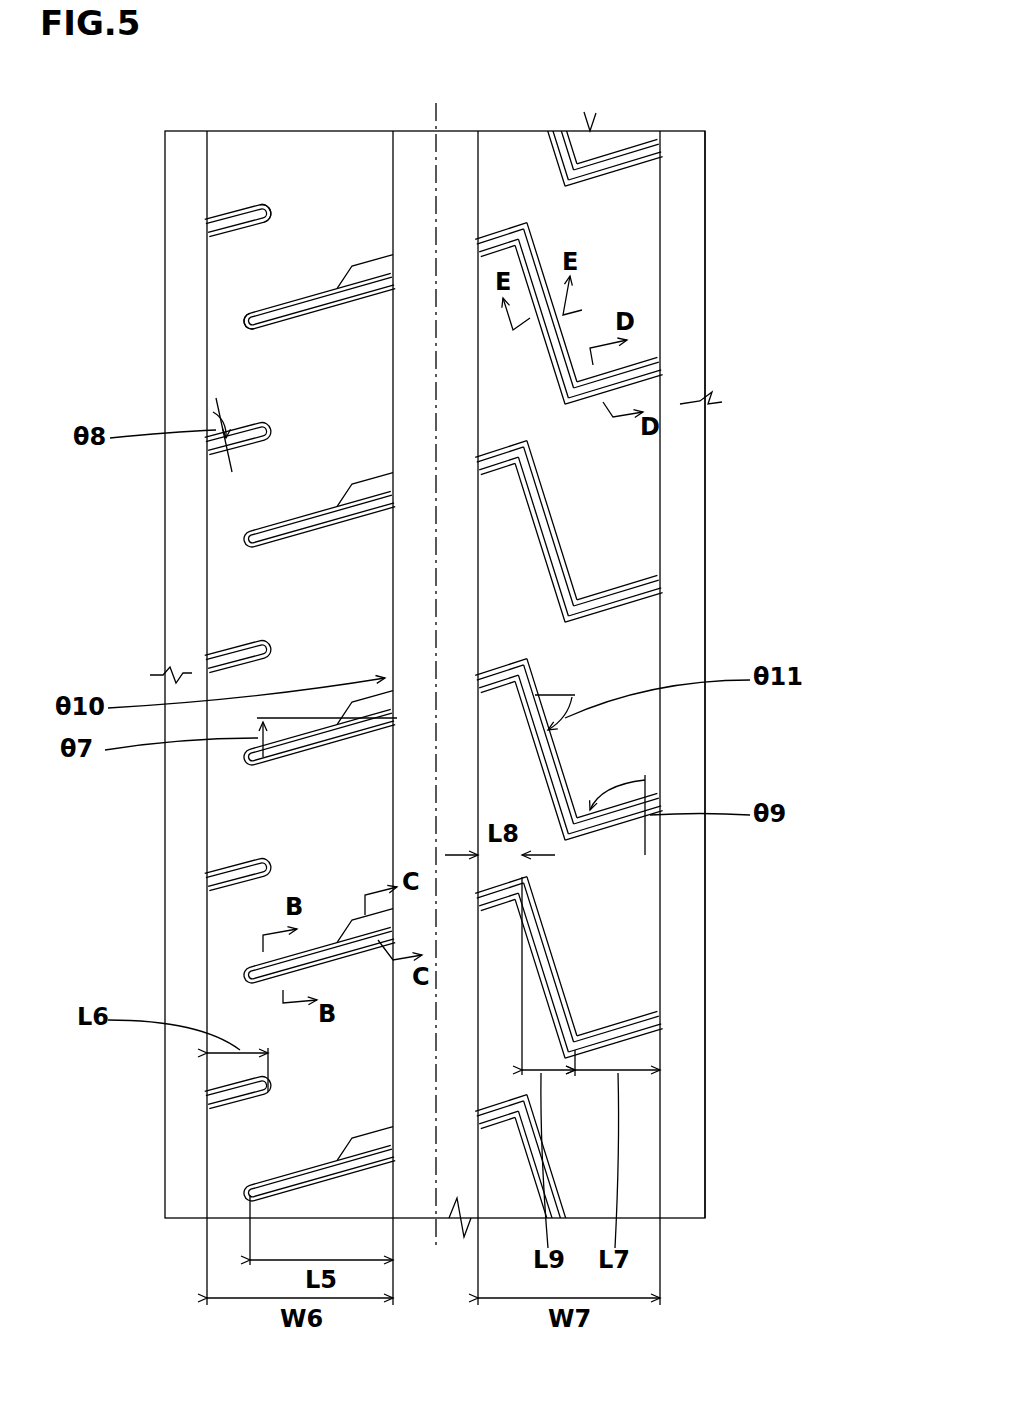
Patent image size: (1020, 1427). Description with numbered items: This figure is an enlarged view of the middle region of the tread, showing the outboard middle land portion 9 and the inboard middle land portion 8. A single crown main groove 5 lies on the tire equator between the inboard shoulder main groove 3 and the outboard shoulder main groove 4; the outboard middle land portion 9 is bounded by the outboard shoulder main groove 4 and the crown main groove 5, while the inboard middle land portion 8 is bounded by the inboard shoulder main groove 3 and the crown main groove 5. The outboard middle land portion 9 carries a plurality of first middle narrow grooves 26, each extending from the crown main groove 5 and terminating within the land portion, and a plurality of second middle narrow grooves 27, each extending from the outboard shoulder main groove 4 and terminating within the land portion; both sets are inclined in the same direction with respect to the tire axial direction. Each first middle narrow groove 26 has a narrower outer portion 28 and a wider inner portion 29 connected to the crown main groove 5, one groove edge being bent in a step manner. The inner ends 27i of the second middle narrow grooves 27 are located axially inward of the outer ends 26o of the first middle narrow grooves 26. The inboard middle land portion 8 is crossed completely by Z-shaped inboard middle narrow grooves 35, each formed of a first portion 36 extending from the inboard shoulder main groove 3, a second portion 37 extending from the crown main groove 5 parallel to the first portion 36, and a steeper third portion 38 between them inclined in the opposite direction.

The inboard shoulder main groove 3 is at (682, 178).
The outboard shoulder main groove 4 is at (186, 178).
The crown main groove 5 is at (455, 175).
The inboard middle land portion 8 is at (520, 172).
The outboard middle land portion 9 is at (333, 178).
The first middle narrow groove 26 is at (210, 728).
The outer end of first middle narrow groove 26o is at (248, 322).
The second middle narrow groove 27 is at (230, 232).
The inner end of second middle narrow groove 27i is at (274, 206).
The outer portion 28 is at (290, 547).
The inner portion 29 is at (350, 493).
The inboard middle narrow groove 35 is at (658, 641).
The first portion 36 is at (637, 365).
The second portion 37 is at (500, 457).
The third portion 38 is at (532, 249).